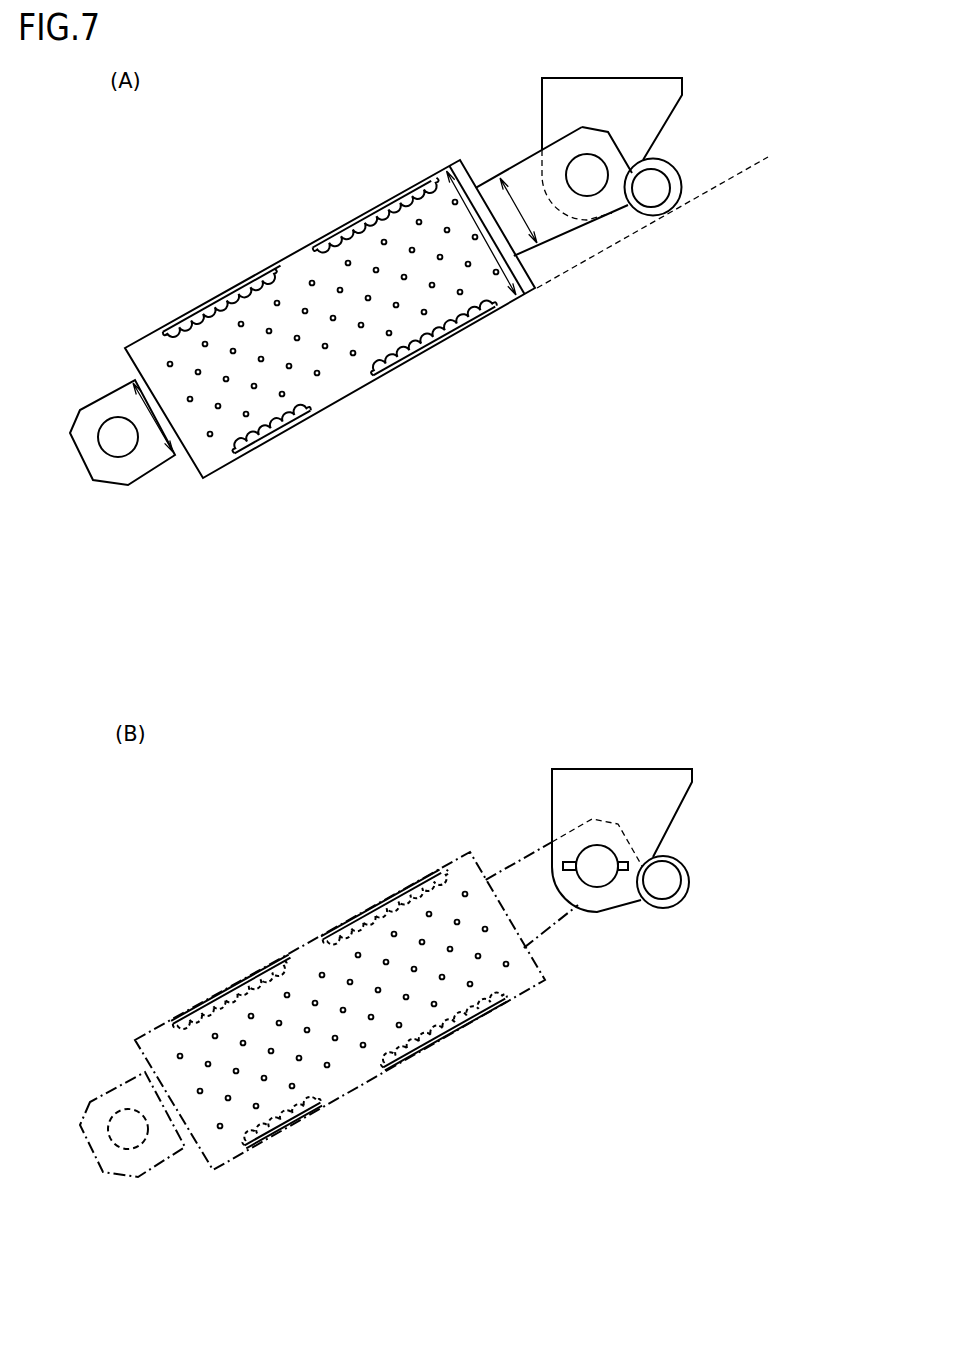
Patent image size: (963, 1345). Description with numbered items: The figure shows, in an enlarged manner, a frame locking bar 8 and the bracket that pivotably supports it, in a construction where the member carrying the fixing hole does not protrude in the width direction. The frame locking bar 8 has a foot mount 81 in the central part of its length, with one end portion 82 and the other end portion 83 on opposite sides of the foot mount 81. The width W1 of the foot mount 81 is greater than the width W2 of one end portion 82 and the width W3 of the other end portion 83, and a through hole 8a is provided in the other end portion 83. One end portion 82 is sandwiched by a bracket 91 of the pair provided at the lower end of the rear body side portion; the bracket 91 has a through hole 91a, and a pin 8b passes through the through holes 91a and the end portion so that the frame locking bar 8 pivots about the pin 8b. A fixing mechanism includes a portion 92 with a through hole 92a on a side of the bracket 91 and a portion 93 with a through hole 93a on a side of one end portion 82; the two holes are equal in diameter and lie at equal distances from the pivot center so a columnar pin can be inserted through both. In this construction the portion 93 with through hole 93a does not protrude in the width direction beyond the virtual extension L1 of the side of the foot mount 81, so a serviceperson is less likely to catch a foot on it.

The frame locking bar 8 is at (345, 366).
The through hole 8a is at (118, 457).
The pin (pivot shaft) 8b is at (588, 176).
The foot mount 81 is at (298, 268).
The one end portion 82 is at (532, 170).
The other end portion 83 is at (122, 403).
The bracket 91 is at (652, 112).
The through hole 91a is at (582, 848).
The portion having through hole 92a formed 92 is at (685, 893).
The through hole 92a is at (673, 883).
The portion having through hole 93a formed 93 is at (630, 203).
The through hole 93a is at (657, 197).
The width of foot mount W1 is at (460, 190).
The width of one end portion W2 is at (517, 212).
The width of the other end portion W3 is at (158, 418).
The virtual extension L1 is at (757, 158).